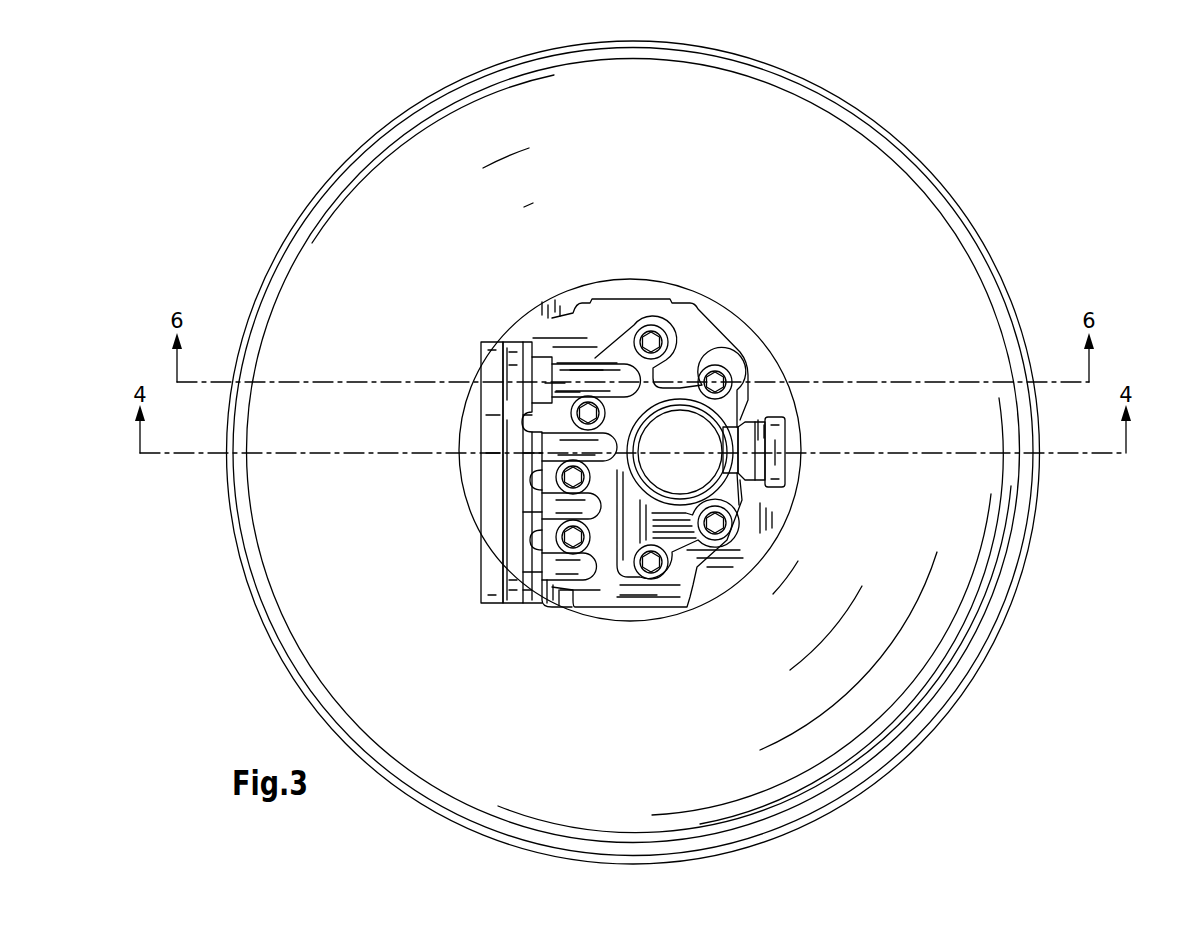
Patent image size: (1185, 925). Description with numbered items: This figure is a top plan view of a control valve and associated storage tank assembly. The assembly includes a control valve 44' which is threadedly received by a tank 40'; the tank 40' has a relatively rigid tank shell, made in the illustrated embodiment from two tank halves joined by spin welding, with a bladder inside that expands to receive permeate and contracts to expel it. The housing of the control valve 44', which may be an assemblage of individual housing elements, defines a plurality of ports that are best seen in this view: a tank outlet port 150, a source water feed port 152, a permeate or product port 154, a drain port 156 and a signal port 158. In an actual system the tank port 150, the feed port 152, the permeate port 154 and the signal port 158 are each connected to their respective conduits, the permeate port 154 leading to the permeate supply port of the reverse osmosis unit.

The tank 40' is at (633, 452).
The control valve 44' is at (630, 432).
The tank outlet port 150 is at (492, 395).
The source water feed port 152 is at (483, 442).
The permeate port 154 is at (483, 502).
The drain port 156 is at (493, 577).
The signal port 158 is at (790, 420).